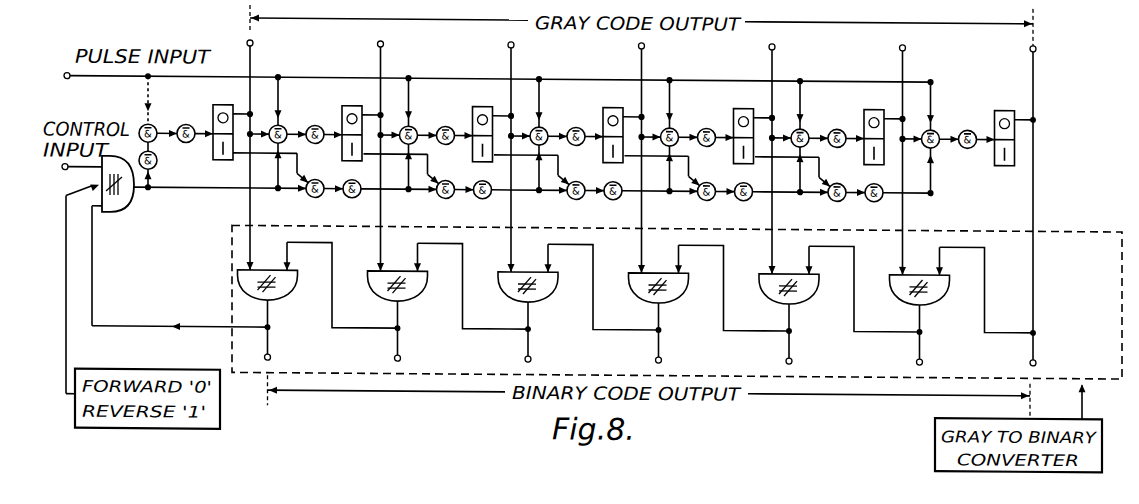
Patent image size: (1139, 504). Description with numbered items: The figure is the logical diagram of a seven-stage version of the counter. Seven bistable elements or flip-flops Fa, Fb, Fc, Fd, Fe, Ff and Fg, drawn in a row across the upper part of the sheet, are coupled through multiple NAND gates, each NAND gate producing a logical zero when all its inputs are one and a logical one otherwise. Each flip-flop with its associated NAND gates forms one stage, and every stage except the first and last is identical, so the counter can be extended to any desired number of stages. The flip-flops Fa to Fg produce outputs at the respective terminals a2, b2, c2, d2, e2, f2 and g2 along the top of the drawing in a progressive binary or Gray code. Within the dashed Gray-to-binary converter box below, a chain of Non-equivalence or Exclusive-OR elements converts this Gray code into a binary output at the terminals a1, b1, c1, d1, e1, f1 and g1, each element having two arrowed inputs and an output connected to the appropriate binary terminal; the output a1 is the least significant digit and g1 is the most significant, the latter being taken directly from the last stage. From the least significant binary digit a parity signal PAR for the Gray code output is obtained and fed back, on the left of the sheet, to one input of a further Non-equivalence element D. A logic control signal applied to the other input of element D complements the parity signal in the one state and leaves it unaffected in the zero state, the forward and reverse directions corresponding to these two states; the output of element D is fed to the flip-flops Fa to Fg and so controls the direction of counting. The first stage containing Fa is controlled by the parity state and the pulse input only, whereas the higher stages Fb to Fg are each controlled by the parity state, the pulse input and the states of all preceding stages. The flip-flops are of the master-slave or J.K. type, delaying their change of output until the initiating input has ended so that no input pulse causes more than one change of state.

The bistable element Fa is at (217, 122).
The bistable element Fb is at (346, 123).
The bistable element Fc is at (477, 124).
The bistable element Fd is at (607, 125).
The bistable element Fe is at (738, 126).
The bistable element Ff is at (868, 127).
The bistable element Fg is at (999, 128).
The Gray code output terminal a2 is at (264, 152).
The Gray code output terminal b2 is at (394, 153).
The Gray code output terminal c2 is at (524, 154).
The Gray code output terminal d2 is at (655, 155).
The Gray code output terminal e2 is at (786, 156).
The Gray code output terminal f2 is at (913, 157).
The Gray code output terminal g2 is at (1047, 186).
The binary output terminal a1 is at (281, 334).
The binary output terminal b1 is at (411, 335).
The binary output terminal c1 is at (540, 336).
The binary output terminal d1 is at (672, 337).
The binary output terminal e1 is at (802, 338).
The binary output terminal f1 is at (930, 339).
The binary output terminal g1 is at (1046, 353).
The further Non-equivalence element D is at (122, 205).
The parity signal PAR is at (207, 323).